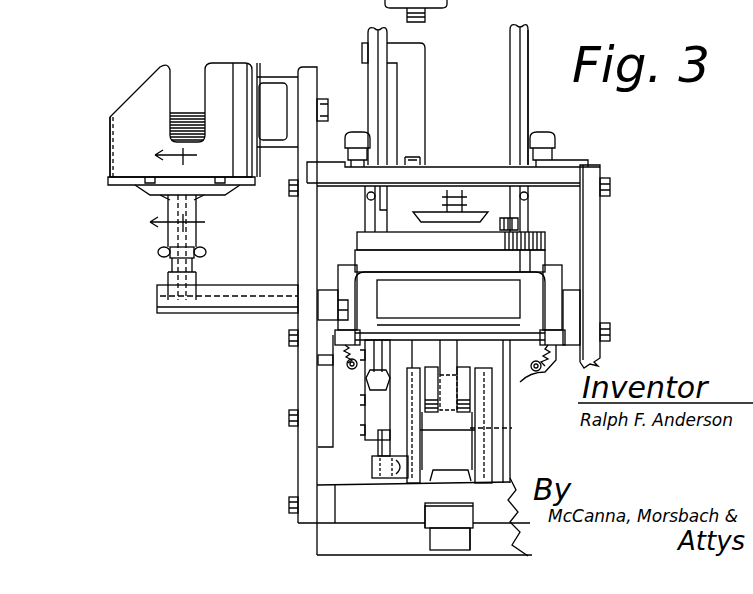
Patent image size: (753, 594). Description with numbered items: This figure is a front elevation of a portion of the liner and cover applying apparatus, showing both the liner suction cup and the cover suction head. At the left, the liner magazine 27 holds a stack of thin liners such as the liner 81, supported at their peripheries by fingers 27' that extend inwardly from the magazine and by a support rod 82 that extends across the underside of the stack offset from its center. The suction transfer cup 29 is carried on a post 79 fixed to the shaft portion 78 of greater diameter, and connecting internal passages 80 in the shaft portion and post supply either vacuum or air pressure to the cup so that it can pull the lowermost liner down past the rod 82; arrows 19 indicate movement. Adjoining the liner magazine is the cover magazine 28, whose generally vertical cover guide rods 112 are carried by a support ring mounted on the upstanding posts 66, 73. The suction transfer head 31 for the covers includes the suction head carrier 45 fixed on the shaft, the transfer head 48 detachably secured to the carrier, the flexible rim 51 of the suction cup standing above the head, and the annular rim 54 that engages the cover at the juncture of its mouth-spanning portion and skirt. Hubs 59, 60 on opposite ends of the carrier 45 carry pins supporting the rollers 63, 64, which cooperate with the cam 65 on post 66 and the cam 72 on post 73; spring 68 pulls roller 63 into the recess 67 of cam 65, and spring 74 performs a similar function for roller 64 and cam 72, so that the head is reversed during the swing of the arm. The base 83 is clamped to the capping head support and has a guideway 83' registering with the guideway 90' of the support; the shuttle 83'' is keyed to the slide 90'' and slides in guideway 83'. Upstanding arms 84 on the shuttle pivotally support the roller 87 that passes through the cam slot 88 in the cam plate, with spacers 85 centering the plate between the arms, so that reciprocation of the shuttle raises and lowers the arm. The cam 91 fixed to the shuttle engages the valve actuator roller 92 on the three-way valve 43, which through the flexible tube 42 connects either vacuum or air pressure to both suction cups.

The liner magazine 27 is at (157, 120).
The fingers 27' is at (94, 167).
The direction of movement arrow 19 is at (192, 188).
The liner 81 is at (240, 182).
The support rod 82 is at (228, 196).
The suction transfer cup 29 is at (165, 200).
The post 79 is at (170, 245).
The internal passages 80 is at (224, 292).
The shaft portion of greater diameter 78 is at (228, 313).
The upstanding post 66 is at (303, 219).
The upstanding post 73 is at (596, 213).
The cover magazine 28 is at (500, 63).
The cover guide rods 112 is at (512, 95).
The flexible rim 51 is at (470, 213).
The annular rim 54 is at (512, 221).
The suction transfer head 31 is at (354, 229).
The transfer head 48 is at (538, 244).
The suction head carrier 45 is at (538, 262).
The hub 60 is at (338, 276).
The hub 59 is at (558, 282).
The cam 72 is at (575, 303).
The spring 68 is at (350, 364).
The spring 74 is at (537, 343).
The roller 64 is at (556, 360).
The roller 63 is at (318, 340).
The recess 67 is at (320, 363).
The cam 65 is at (325, 394).
The flexible tube 42 is at (378, 372).
The three-way valve 43 is at (365, 396).
The valve actuator roller 92 is at (378, 446).
The cam 91 is at (373, 466).
The cam slot 88 is at (442, 340).
The spacers 85 is at (431, 368).
The roller 87 is at (447, 412).
The upstanding arms 84 is at (503, 429).
The base 83 is at (417, 503).
The guideway 83' is at (399, 508).
The shuttle 83'' is at (449, 503).
The guideway 90' is at (494, 541).
The slide 90'' is at (418, 539).